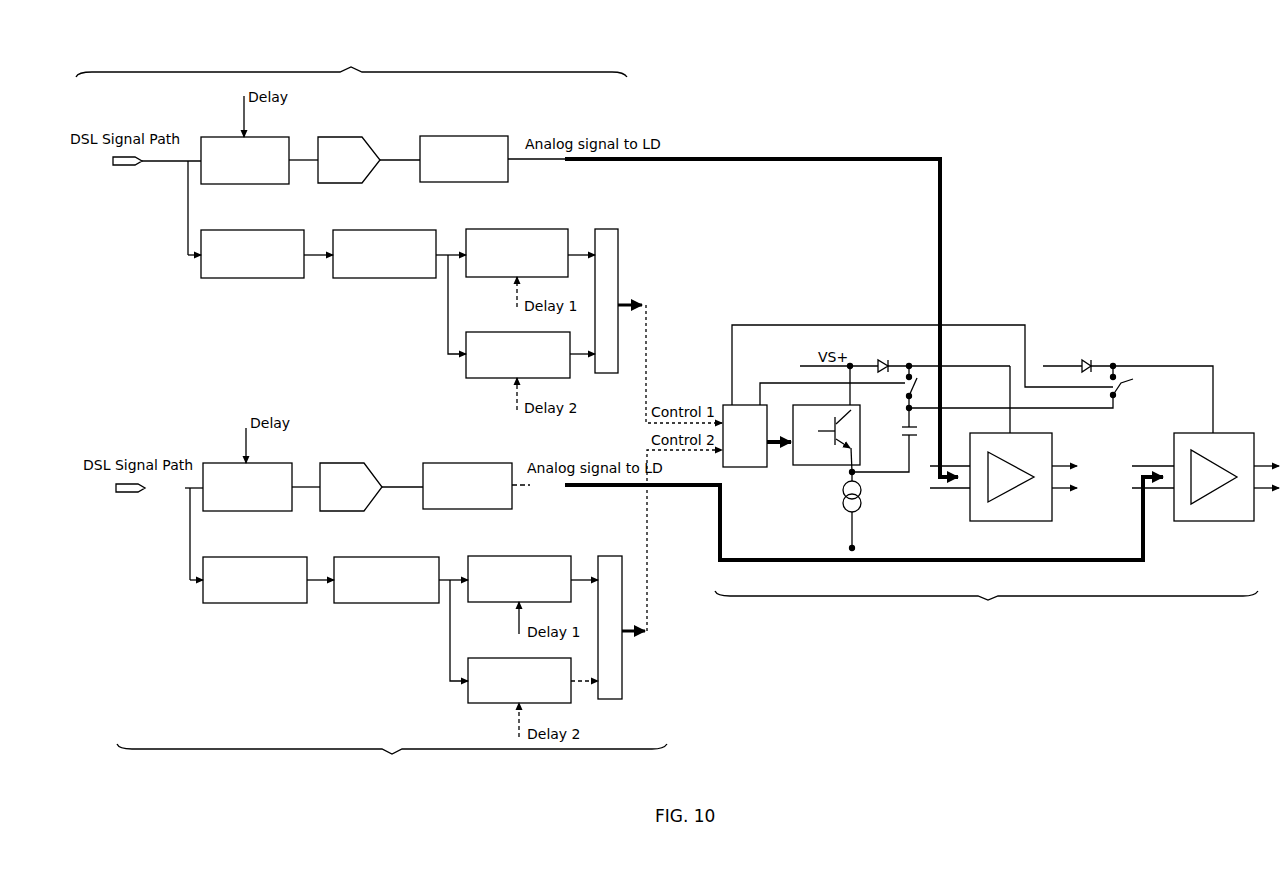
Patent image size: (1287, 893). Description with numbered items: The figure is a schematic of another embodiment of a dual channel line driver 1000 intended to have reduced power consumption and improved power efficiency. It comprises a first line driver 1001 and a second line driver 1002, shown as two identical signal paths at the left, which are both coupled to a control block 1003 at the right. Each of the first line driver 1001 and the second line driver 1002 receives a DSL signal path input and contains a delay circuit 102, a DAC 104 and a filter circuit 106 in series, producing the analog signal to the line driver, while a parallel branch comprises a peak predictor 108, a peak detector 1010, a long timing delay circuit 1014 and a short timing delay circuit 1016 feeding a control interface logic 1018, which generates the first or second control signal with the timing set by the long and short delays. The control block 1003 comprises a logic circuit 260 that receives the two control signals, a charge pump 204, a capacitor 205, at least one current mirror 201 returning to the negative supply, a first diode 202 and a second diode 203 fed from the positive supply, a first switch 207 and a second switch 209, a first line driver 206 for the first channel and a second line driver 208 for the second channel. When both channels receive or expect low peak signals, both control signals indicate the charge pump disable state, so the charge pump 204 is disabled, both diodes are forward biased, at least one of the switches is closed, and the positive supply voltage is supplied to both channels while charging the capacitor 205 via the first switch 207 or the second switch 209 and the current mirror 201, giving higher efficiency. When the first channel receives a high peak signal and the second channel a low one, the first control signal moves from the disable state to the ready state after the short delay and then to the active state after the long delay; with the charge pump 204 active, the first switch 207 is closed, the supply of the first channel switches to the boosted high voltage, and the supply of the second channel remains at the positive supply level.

The dual channel line driver 1000 is at (1096, 100).
The first line driver 1001 is at (351, 60).
The second line driver 1002 is at (392, 764).
The control block 1003 is at (986, 611).
The delay circuit 102 is at (229, 137).
The DAC 104 is at (352, 137).
The filter circuit 106 is at (490, 136).
The peak predictor 108 is at (237, 278).
The peak detector 1010 is at (424, 278).
The long timing delay circuit 1014 is at (549, 229).
The short timing delay circuit 1016 is at (493, 378).
The control interface logic 1018 is at (607, 229).
The logic circuit 260 is at (765, 467).
The charge pump 204 is at (838, 467).
The first diode 202 is at (872, 360).
The second diode 203 is at (1076, 360).
The first switch 207 is at (915, 372).
The second switch 209 is at (1128, 380).
The capacitor 205 is at (909, 440).
The current mirror 201 is at (857, 513).
The first line driver 206 is at (1012, 521).
The second line driver 208 is at (1232, 521).